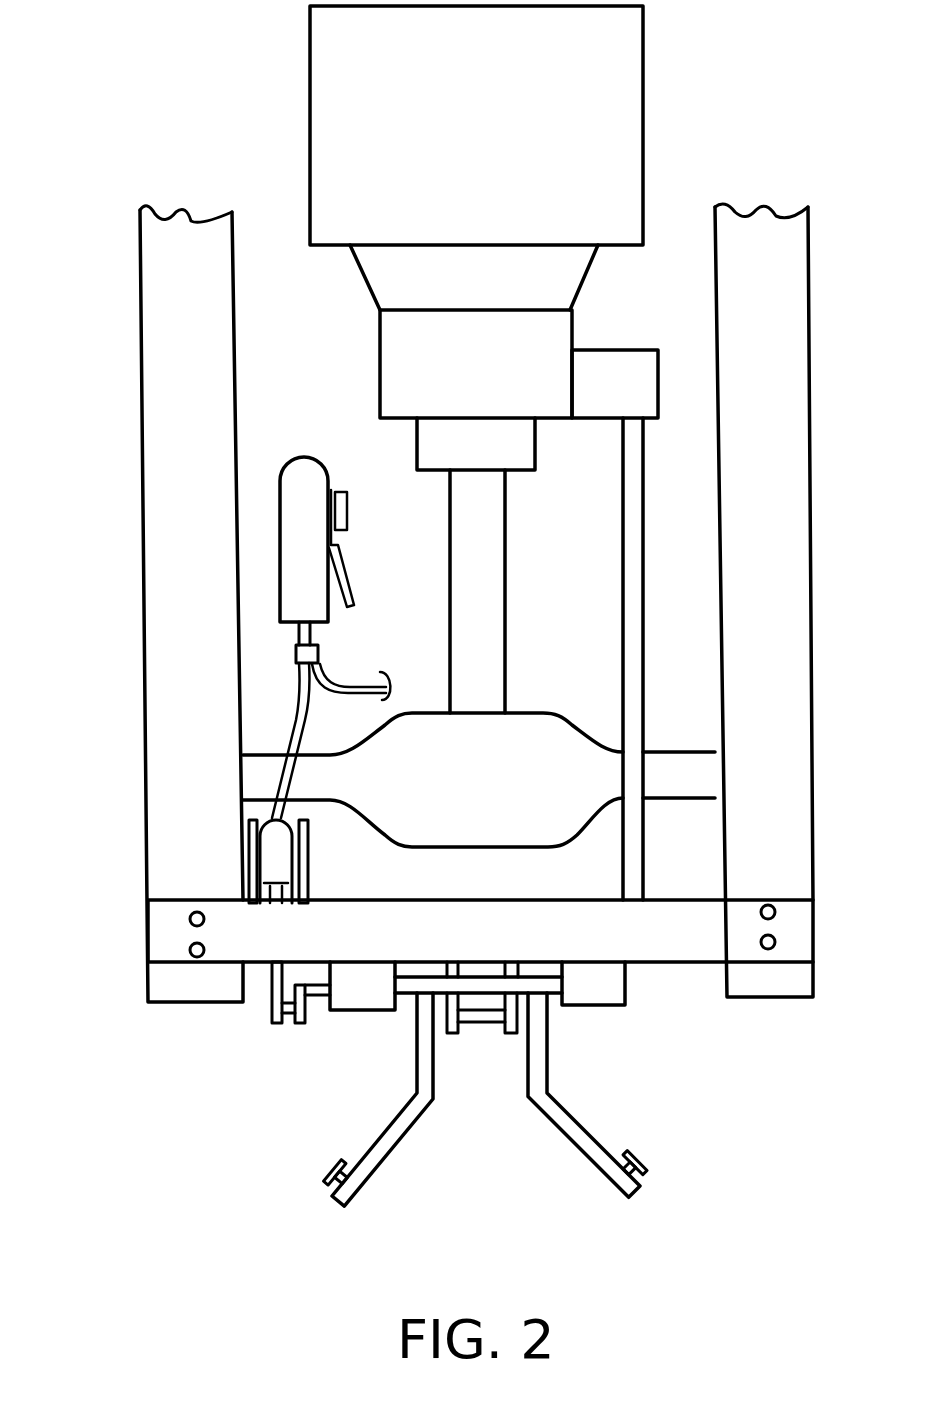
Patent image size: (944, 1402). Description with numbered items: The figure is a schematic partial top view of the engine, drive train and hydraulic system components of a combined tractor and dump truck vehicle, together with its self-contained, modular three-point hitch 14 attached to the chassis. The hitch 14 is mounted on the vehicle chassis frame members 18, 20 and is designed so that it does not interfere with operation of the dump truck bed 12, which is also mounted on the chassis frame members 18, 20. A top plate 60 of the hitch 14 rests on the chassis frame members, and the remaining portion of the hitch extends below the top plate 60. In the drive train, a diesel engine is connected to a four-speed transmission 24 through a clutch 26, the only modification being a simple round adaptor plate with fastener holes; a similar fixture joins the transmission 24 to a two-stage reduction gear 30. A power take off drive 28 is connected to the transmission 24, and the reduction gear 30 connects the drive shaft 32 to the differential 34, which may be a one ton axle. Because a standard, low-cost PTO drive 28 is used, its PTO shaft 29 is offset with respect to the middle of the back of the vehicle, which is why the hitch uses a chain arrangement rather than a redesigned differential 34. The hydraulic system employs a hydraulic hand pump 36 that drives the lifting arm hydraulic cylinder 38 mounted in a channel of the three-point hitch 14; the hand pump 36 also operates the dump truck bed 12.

The dump truck bed 12 is at (496, 141).
The self-contained, modular three-point hitch 14 is at (320, 1085).
The chassis frame member 18 is at (792, 639).
The chassis frame member 20 is at (178, 530).
The four-speed transmission 24 is at (400, 367).
The clutch 26 is at (393, 281).
The power take off (PTO) drive 28 is at (614, 375).
The PTO shaft 29 is at (628, 599).
The two-stage reduction gear 30 is at (497, 443).
The drive shaft 32 is at (490, 620).
The differential 34 is at (511, 803).
The hydraulic hand pump 36 is at (307, 566).
The lifting arm hydraulic cylinder 38 is at (270, 857).
The top plate 60 is at (666, 942).